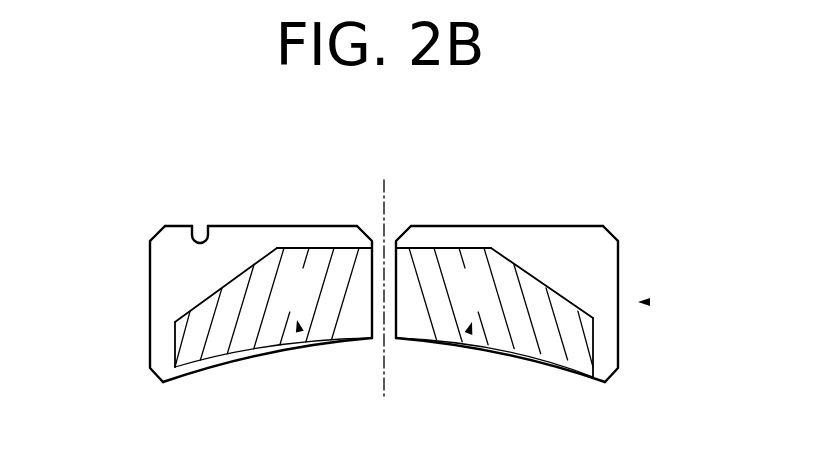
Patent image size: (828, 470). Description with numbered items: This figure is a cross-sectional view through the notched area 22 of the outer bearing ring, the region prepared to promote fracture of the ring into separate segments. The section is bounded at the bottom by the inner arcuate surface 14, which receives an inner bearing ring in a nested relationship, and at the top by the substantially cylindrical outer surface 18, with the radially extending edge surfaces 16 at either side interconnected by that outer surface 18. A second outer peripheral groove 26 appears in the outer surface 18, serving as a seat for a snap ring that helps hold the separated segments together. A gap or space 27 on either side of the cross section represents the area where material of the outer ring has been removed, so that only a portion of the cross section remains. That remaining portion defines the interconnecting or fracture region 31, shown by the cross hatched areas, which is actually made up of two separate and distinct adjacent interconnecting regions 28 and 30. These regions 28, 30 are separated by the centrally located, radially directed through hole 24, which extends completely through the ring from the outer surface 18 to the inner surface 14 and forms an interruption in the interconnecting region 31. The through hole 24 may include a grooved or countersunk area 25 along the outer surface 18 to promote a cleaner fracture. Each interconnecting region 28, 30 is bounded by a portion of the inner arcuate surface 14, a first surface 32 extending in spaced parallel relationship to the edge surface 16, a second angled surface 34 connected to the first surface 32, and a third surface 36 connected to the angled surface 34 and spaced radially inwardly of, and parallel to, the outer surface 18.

The inner arcuate surface 14 is at (515, 352).
The edge surface 16 is at (150, 272).
The outer surface 18 is at (252, 226).
The notched area 22 is at (648, 302).
The through hole 24 is at (378, 245).
The countersunk area 25 is at (401, 236).
The second outer peripheral groove 26 is at (200, 229).
The gap 27 is at (200, 257).
The interconnecting region 28 is at (282, 305).
The interconnecting region 30 is at (454, 305).
The interconnecting region 31 is at (298, 326).
The first surface 32 is at (175, 338).
The second angled surface 34 is at (212, 289).
The third surface 36 is at (303, 247).